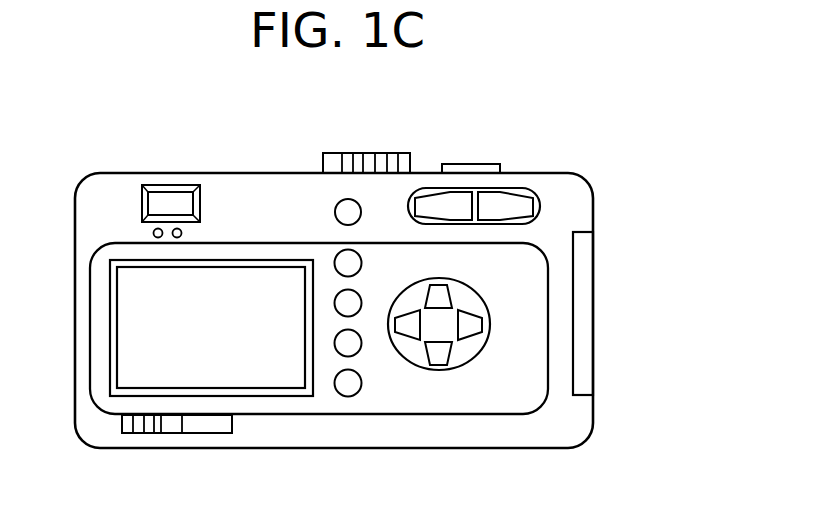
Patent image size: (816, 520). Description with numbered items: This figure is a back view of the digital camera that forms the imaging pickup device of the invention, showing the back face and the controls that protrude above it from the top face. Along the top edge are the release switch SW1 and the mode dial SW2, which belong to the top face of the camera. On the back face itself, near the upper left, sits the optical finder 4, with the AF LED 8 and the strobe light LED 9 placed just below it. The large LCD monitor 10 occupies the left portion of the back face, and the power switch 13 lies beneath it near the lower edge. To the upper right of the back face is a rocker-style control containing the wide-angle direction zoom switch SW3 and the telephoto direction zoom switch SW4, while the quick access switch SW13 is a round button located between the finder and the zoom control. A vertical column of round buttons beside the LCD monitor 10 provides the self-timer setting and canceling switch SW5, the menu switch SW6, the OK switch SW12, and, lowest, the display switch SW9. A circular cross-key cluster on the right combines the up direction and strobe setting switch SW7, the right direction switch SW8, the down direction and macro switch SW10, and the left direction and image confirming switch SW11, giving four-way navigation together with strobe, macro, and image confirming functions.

The optical finder 4 is at (170, 197).
The AF LED 8 is at (153, 233).
The strobe light LED 9 is at (182, 233).
The LCD monitor 10 is at (130, 342).
The power switch 13 is at (135, 425).
The release switch SW1 is at (482, 168).
The mode dial SW2 is at (348, 153).
The wide-angle direction zoom switch SW3 is at (430, 203).
The telephoto direction zoom switch SW4 is at (518, 207).
The self-timer setting and canceling switch SW5 is at (334, 263).
The menu switch SW6 is at (334, 303).
The up direction and strobe setting switch SW7 is at (442, 297).
The right direction switch SW8 is at (470, 328).
The display switch SW9 is at (345, 392).
The down direction and macro switch SW10 is at (438, 362).
The left direction and image confirming switch SW11 is at (412, 328).
The OK switch SW12 is at (334, 343).
The quick access switch SW13 is at (336, 212).